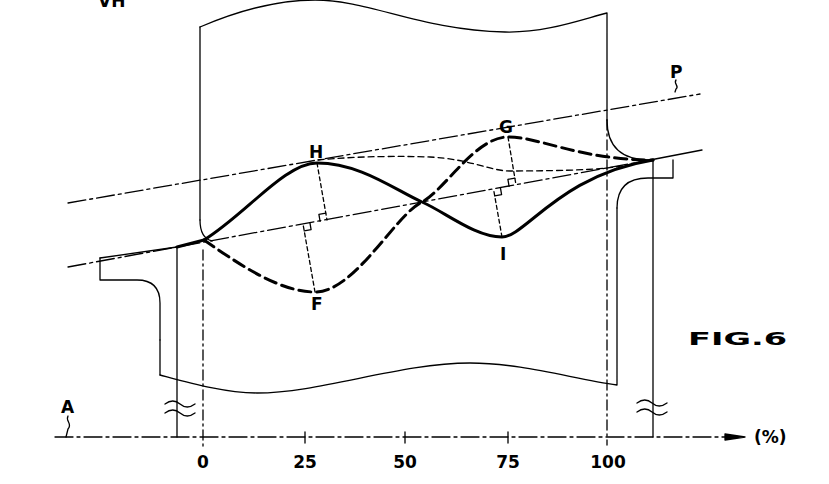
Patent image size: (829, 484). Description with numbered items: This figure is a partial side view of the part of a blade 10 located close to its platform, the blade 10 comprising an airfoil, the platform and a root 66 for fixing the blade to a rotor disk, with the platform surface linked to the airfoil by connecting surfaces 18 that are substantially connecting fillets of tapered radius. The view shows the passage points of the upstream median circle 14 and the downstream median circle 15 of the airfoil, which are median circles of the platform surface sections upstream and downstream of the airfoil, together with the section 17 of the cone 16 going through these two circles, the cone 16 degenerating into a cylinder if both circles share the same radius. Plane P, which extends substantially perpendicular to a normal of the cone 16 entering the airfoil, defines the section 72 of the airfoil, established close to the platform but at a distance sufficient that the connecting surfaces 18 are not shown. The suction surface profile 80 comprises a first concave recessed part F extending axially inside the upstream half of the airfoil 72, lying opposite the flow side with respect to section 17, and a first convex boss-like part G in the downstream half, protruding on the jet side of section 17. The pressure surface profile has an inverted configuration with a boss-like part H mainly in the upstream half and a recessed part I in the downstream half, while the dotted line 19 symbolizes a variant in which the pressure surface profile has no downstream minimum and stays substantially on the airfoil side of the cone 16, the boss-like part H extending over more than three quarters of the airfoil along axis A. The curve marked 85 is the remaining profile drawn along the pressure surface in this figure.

The blade 10 is at (404, 60).
The upstream median circle 14 is at (178, 237).
The downstream median circle 15 is at (654, 140).
The cone 16 is at (655, 270).
The section of the cone 17 is at (352, 216).
The connecting surfaces 18 is at (198, 229).
The dotted line 19 is at (433, 158).
The root 66 is at (164, 340).
The section 72 is at (384, 143).
The suction surface profile 80 is at (567, 150).
The suction side profile curve 85 is at (542, 229).